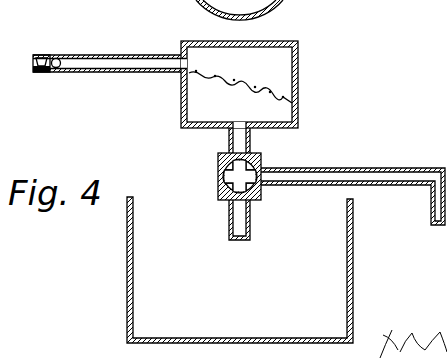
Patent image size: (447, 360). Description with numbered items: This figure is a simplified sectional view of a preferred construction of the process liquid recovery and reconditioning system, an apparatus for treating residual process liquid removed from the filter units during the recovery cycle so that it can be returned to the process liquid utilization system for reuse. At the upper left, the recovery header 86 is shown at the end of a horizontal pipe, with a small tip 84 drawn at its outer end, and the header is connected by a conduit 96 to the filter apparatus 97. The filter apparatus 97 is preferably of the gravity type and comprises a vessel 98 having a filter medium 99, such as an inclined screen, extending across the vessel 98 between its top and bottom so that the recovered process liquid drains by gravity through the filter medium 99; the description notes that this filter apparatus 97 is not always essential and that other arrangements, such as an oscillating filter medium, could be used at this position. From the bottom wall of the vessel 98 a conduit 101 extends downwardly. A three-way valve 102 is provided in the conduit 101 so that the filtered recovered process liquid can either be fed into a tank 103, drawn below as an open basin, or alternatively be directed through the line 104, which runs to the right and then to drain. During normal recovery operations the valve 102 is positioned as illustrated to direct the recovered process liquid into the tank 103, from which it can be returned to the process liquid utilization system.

The nozzle tip 84 is at (38, 55).
The recovery header 86 is at (57, 69).
The conduit 96 is at (119, 55).
The filter apparatus 97 is at (308, 54).
The vessel 98 is at (300, 78).
The filter medium 99 is at (233, 82).
The conduit 101 is at (236, 137).
The three-way valve 102 is at (218, 186).
The tank 103 is at (354, 265).
The line 104 is at (366, 168).